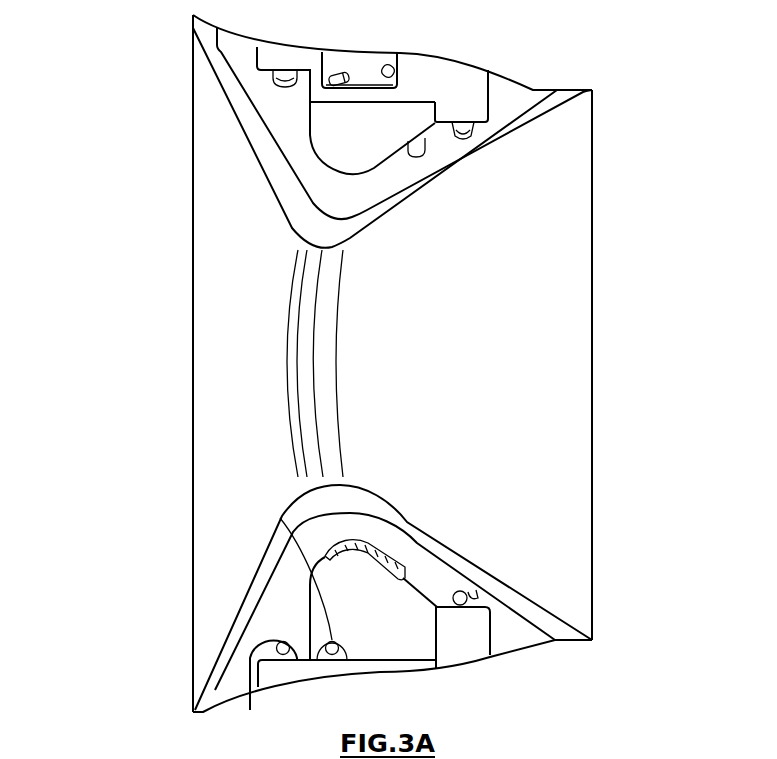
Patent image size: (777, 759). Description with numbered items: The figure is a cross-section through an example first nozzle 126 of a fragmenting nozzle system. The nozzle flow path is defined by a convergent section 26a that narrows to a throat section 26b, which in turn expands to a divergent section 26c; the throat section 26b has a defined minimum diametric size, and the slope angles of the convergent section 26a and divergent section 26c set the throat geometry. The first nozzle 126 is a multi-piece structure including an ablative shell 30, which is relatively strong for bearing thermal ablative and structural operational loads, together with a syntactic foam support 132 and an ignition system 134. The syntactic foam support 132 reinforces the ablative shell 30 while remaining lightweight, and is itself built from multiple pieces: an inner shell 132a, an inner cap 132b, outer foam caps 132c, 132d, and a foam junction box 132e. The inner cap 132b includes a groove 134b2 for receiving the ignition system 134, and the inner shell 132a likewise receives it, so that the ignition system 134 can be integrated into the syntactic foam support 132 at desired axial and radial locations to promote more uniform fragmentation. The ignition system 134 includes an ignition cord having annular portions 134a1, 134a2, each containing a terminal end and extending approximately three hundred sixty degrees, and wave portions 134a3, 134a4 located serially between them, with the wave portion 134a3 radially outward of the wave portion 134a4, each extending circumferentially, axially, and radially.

The convergent section 26a is at (213, 403).
The throat section 26b is at (333, 248).
The divergent section 26c is at (575, 162).
The ablative shell 30 is at (227, 627).
The first nozzle 126 is at (132, 574).
The syntactic foam support 132 is at (518, 645).
The inner shell 132a is at (522, 97).
The inner cap 132b is at (407, 122).
The outer foam cap 132c is at (430, 680).
The outer foam cap 132d is at (473, 650).
The foam junction box 132e is at (362, 62).
The ignition system 134 is at (457, 606).
The annular portion 134a1 is at (460, 590).
The annular portion 134a2 is at (470, 597).
The wave portion 134a3 is at (395, 552).
The wave portion 134a4 is at (323, 646).
The groove 134b2 is at (280, 519).